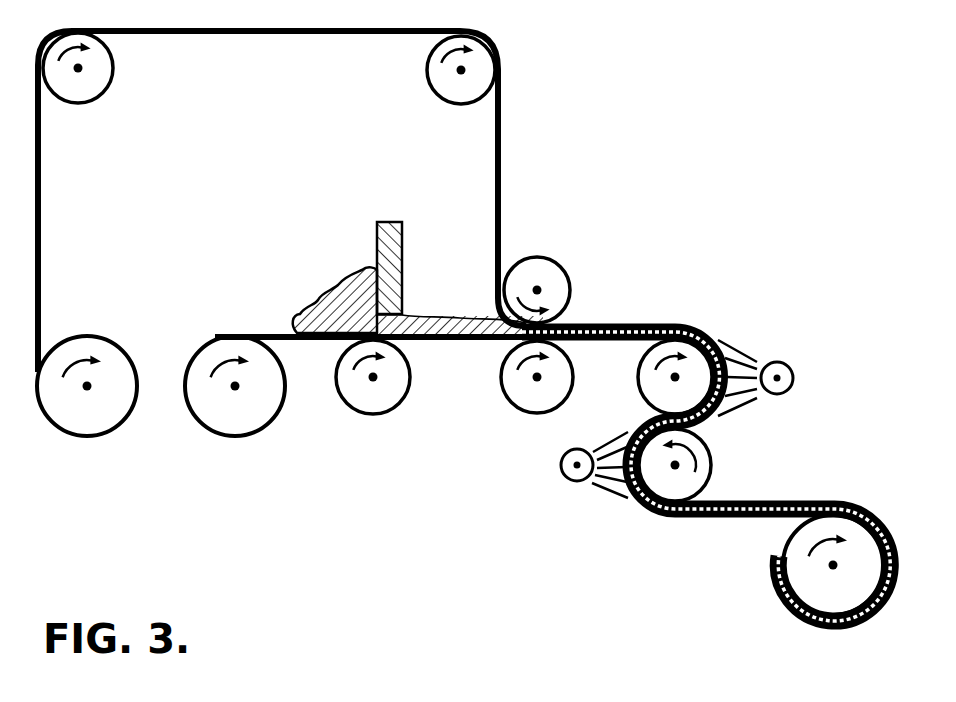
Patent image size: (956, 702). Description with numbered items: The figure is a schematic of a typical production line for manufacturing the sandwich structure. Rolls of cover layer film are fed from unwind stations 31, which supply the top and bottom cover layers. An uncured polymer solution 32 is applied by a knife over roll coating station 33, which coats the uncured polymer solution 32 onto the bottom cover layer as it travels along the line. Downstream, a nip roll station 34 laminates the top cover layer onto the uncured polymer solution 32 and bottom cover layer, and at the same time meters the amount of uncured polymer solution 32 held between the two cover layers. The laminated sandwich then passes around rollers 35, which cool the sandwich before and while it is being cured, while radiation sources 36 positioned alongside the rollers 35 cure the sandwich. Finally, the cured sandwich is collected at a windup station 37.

The unwind stations 31 is at (70, 422).
The uncured polymer solution 32 is at (322, 293).
The knife over roll coating station 33 is at (400, 233).
The nip roll station 34 is at (553, 268).
The rollers 35 is at (655, 398).
The radiation sources 36 is at (782, 368).
The windup station 37 is at (800, 590).